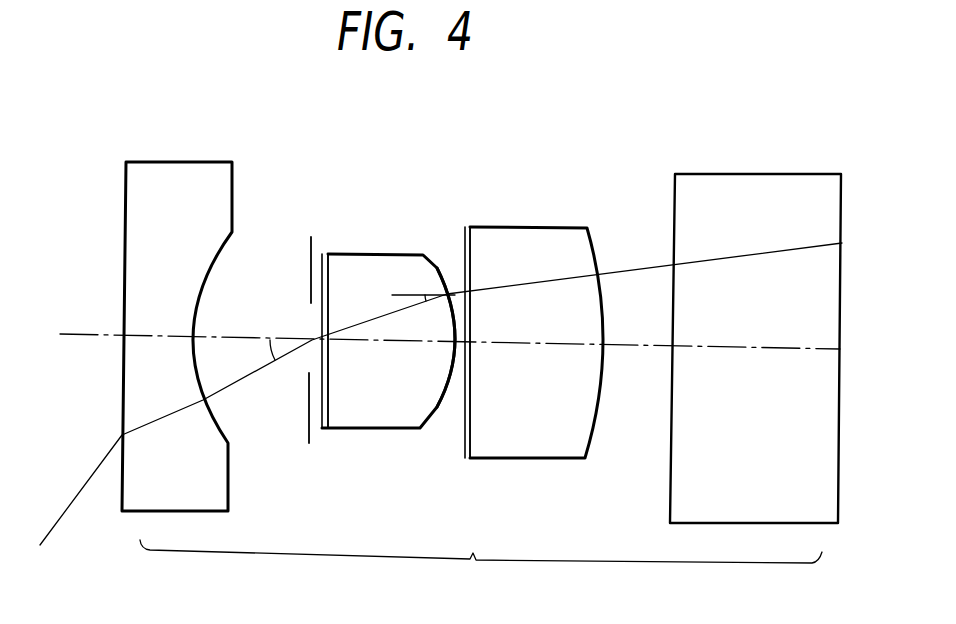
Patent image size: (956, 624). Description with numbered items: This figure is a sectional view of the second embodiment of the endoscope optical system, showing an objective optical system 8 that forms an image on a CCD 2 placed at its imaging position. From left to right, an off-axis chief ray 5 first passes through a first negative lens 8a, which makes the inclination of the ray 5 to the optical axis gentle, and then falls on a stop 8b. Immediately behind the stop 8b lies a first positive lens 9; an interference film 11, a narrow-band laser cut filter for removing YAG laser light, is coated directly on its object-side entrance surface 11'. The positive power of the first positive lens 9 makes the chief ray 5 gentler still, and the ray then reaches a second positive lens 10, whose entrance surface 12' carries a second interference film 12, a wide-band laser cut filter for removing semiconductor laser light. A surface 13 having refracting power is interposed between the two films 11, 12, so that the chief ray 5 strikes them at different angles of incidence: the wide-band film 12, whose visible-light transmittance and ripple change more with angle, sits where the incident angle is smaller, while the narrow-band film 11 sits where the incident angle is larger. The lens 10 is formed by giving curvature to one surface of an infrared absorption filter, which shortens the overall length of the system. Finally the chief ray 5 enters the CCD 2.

The CCD 2 is at (845, 216).
The off-axis chief ray 5 is at (78, 494).
The objective optical system 8 is at (481, 570).
The first negative lens 8a is at (170, 166).
The stop 8b is at (312, 250).
The first positive lens 9 is at (377, 432).
The second positive lens 10 is at (536, 232).
The interference film (narrow-band laser cut filter) 11 is at (308, 379).
The entrance surface of first positive lens 11' is at (342, 373).
The interference film (wide-band laser cut filter) 12 is at (446, 373).
The entrance surface of second positive lens 12' is at (493, 366).
The surface having refracting power 13 is at (438, 267).